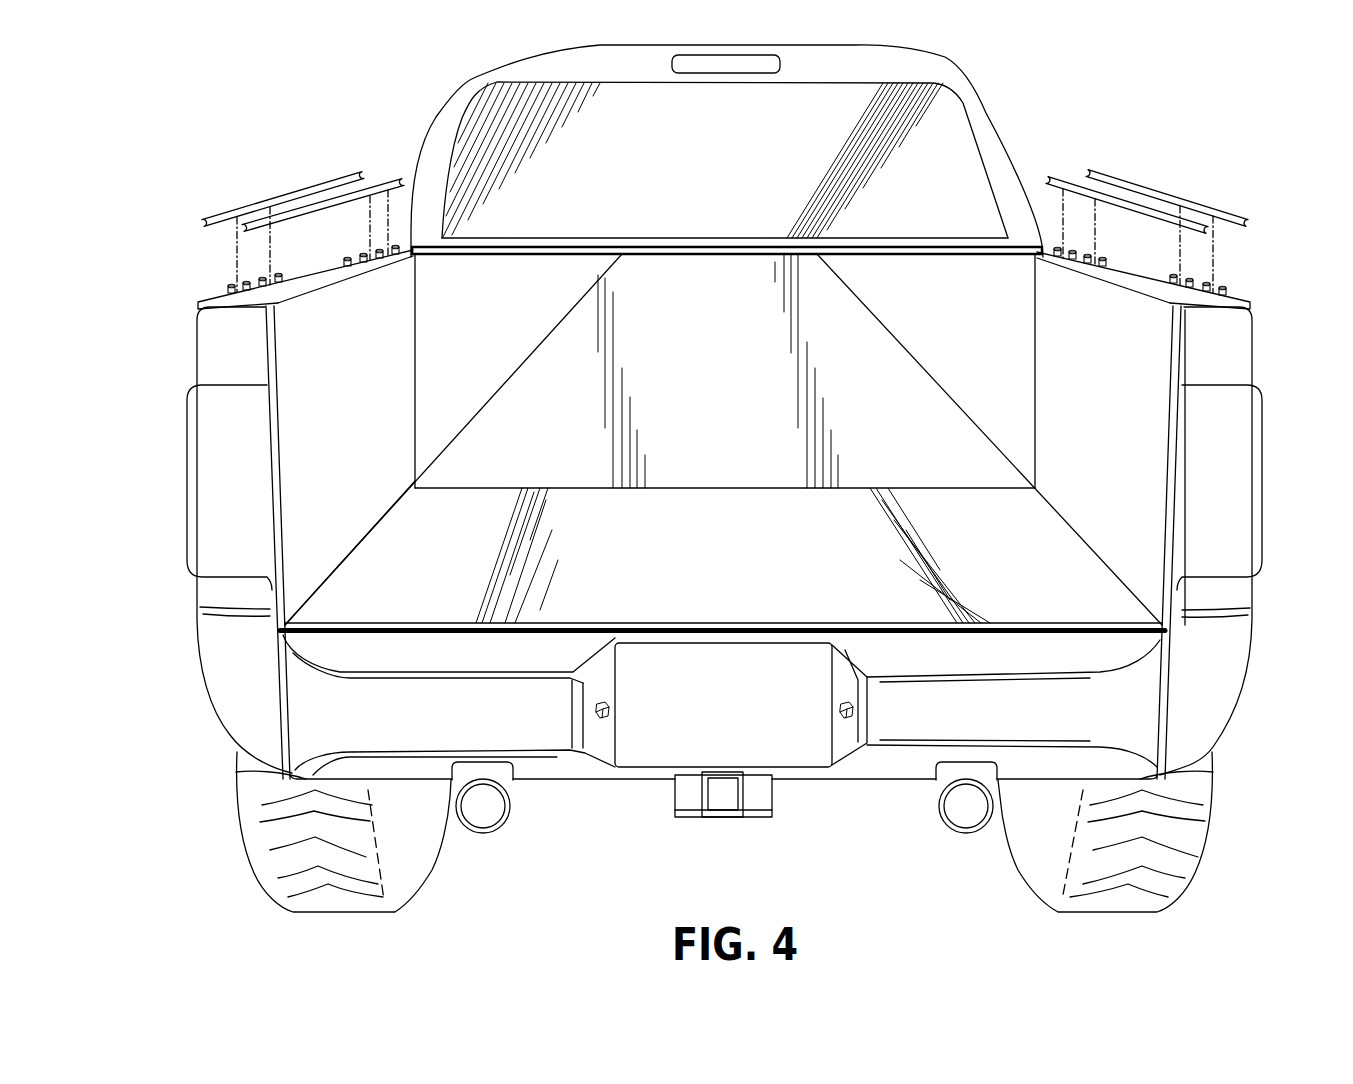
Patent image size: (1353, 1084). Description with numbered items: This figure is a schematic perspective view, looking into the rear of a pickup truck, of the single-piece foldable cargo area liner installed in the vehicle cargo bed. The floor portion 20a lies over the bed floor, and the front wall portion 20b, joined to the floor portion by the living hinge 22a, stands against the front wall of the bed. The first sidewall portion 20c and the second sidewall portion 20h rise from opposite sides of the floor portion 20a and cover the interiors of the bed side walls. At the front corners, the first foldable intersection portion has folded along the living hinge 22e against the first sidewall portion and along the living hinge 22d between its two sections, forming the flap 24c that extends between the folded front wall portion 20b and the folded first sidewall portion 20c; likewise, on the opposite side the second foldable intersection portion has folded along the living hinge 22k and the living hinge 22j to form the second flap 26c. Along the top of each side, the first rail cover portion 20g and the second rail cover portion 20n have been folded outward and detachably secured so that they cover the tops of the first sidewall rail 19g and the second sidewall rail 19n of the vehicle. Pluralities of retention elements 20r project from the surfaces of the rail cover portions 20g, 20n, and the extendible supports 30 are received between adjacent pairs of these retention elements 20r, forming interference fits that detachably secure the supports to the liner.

The sidewall rail 19g is at (233, 343).
The second sidewall rail 19n is at (1223, 347).
The floor portion 20a is at (400, 593).
The front wall portion 20b is at (1042, 250).
The first sidewall portion 20c is at (318, 448).
The first rail cover portion 20g is at (198, 303).
The second sidewall portion 20h is at (1133, 357).
The second rail cover portion 20n is at (1252, 302).
The retention elements 20r is at (227, 293).
The living hinge 22a is at (778, 488).
The living hinge 22d is at (488, 405).
The living hinge 22e is at (415, 368).
The living hinge 22j is at (948, 395).
The living hinge 22k is at (1035, 413).
The flap 24c is at (546, 275).
The second flap 26c is at (878, 272).
The extendible support 30 is at (297, 212).